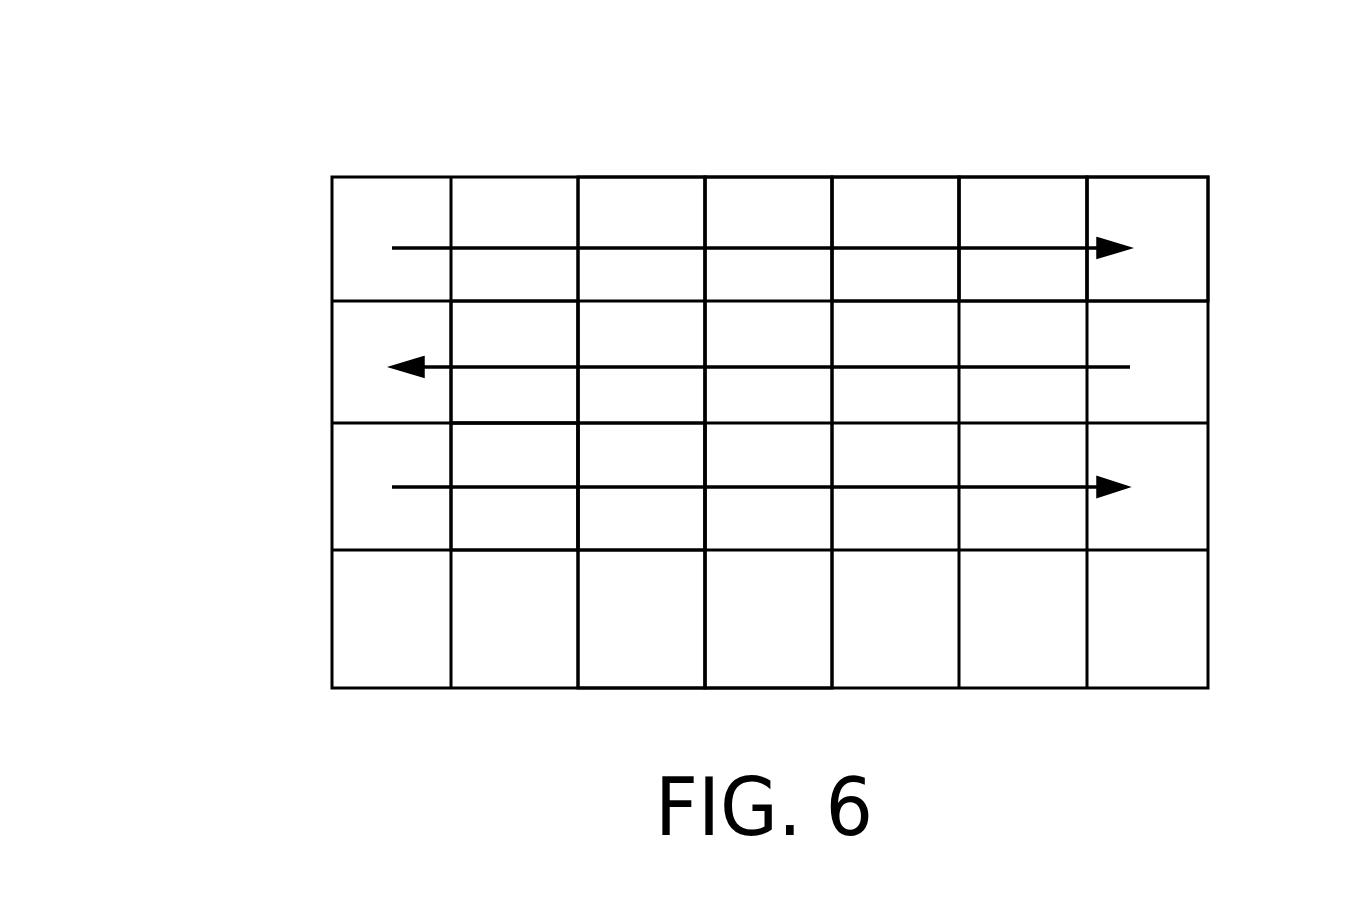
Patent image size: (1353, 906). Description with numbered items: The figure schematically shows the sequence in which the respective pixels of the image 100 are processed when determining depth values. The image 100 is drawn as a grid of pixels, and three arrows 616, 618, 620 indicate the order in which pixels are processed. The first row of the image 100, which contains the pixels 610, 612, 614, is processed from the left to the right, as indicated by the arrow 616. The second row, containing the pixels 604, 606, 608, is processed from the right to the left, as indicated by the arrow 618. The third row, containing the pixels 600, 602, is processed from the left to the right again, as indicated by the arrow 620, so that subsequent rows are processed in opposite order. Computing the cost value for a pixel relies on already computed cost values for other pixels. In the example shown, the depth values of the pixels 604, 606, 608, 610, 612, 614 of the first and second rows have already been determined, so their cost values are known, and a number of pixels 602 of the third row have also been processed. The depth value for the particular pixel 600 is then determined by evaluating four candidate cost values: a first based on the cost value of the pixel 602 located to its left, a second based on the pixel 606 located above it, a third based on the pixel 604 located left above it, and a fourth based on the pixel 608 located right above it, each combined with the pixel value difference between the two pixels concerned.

The image 100 is at (405, 176).
The particular pixel 600 is at (612, 457).
The pixel 602 is at (477, 442).
The pixel 604 is at (510, 350).
The pixel 606 is at (637, 388).
The pixel 608 is at (767, 390).
The pixel 610 is at (902, 193).
The pixel 612 is at (1010, 197).
The pixel 614 is at (1140, 193).
The arrow 616 is at (1120, 248).
The arrow 618 is at (1108, 370).
The arrow 620 is at (1125, 488).